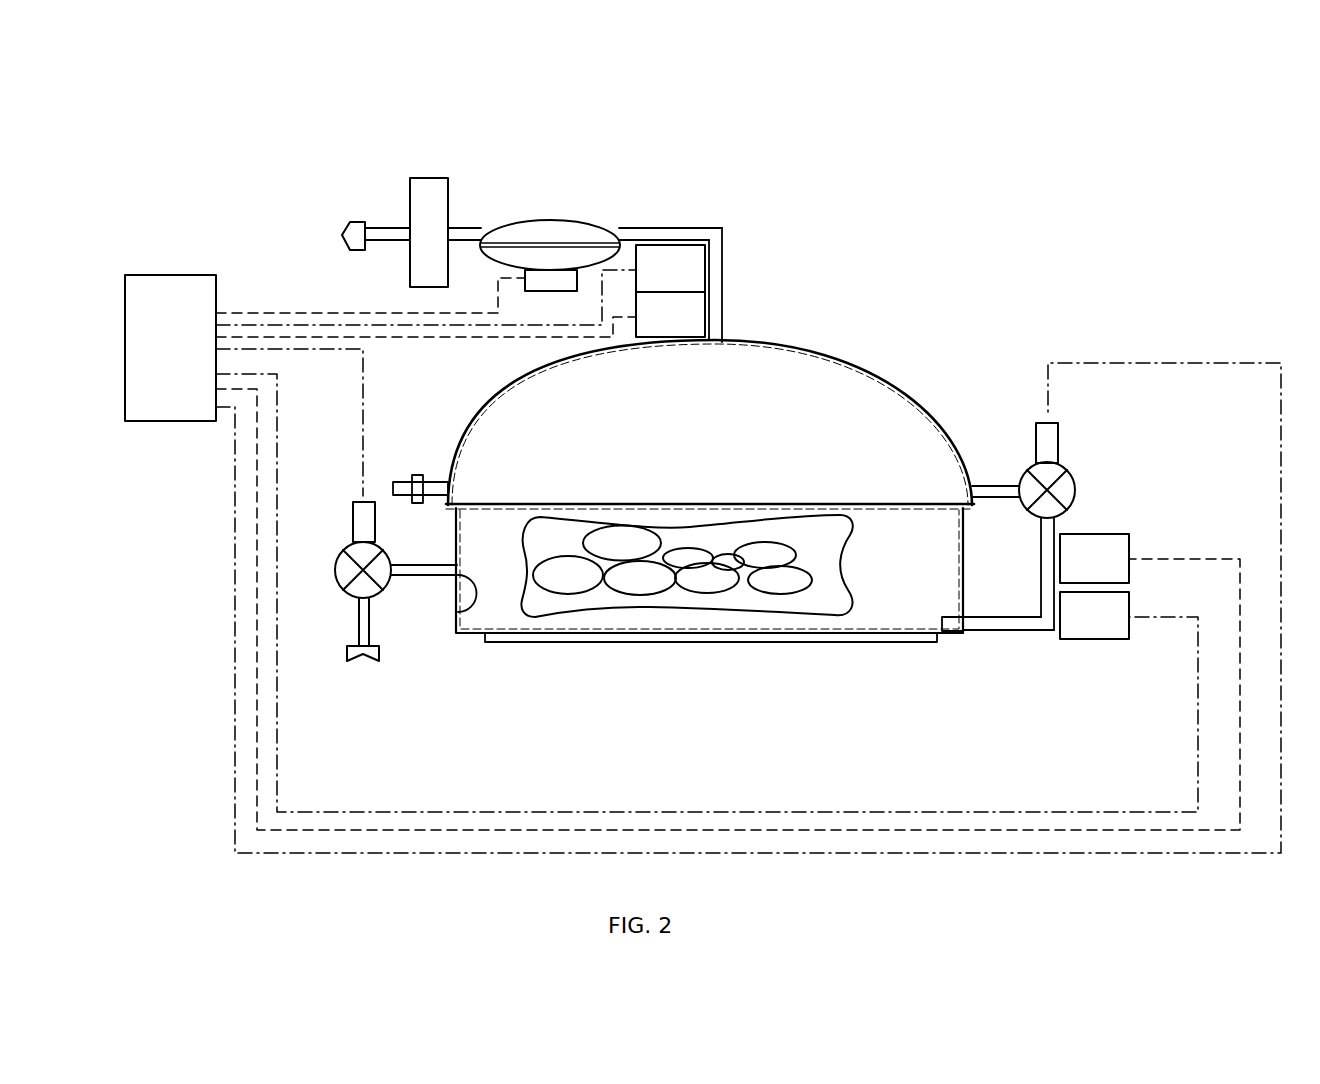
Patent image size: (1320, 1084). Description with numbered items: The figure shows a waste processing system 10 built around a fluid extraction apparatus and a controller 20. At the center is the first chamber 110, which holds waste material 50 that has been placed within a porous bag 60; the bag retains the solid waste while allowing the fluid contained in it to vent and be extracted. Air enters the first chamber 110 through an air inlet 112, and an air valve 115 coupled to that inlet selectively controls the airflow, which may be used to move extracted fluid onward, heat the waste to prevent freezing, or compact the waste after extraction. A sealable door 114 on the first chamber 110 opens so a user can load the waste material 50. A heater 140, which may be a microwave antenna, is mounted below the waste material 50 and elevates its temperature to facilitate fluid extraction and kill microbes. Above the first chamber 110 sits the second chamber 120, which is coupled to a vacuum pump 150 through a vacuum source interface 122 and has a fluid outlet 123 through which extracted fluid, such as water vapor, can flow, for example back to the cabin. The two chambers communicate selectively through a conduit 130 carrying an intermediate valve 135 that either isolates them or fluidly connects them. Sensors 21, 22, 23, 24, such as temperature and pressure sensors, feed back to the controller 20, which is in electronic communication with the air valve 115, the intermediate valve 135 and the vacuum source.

The waste processing system 10 is at (229, 139).
The controller 20 is at (170, 348).
The sensor 21 is at (684, 262).
The sensor 22 is at (684, 317).
The sensor 23 is at (1107, 569).
The sensor 24 is at (1098, 618).
The waste material 50 is at (770, 558).
The porous bag 60 is at (795, 613).
The first chamber 110 is at (958, 632).
The air inlet 112 is at (458, 612).
The sealable door 114 is at (967, 587).
The air valve 115 is at (327, 571).
The second chamber 120 is at (922, 405).
The vacuum source interface 122 is at (718, 348).
The fluid outlet 123 is at (440, 478).
The conduit 130 is at (1056, 524).
The intermediate valve 135 is at (1081, 497).
The heater 140 is at (556, 643).
The vacuum pump 150 is at (562, 202).